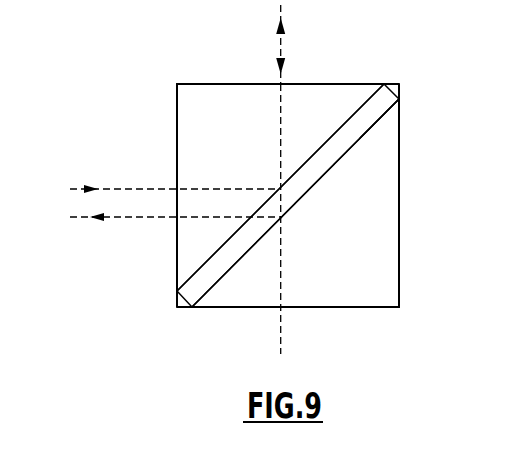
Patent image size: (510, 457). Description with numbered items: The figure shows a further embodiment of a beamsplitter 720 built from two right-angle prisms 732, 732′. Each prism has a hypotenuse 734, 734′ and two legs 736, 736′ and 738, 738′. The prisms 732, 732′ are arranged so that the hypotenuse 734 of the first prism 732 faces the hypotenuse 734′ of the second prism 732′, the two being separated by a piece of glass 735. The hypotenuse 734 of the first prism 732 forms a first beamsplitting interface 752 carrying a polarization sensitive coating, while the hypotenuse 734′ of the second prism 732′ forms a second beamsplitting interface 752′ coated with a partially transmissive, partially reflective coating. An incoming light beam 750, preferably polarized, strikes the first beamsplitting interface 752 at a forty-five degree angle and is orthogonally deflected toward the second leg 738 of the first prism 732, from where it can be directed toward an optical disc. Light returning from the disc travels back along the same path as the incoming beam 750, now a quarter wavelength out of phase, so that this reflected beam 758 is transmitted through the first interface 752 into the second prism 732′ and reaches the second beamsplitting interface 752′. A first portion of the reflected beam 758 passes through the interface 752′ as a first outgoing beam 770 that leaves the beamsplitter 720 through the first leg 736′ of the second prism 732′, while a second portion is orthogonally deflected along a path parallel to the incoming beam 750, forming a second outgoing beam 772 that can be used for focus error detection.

The beamsplitter 720 is at (362, 338).
The first right-angle prism 732 is at (170, 90).
The second right-angle prism 732′ is at (403, 228).
The hypotenuse of first prism 734 is at (345, 123).
The hypotenuse of second prism 734′ is at (338, 160).
The piece of glass 735 is at (188, 297).
The first leg of first prism 736 is at (177, 108).
The first leg of second prism 736′ is at (384, 308).
The second leg of first prism 738 is at (220, 83).
The second leg of second prism 738′ is at (402, 275).
The incoming light beam 750 is at (122, 187).
The first beamsplitting interface 752 is at (366, 101).
The second beamsplitting interface 752′ is at (380, 118).
The reflected beam 758 is at (287, 63).
The first outgoing beam 770 is at (282, 352).
The second outgoing beam 772 is at (110, 218).